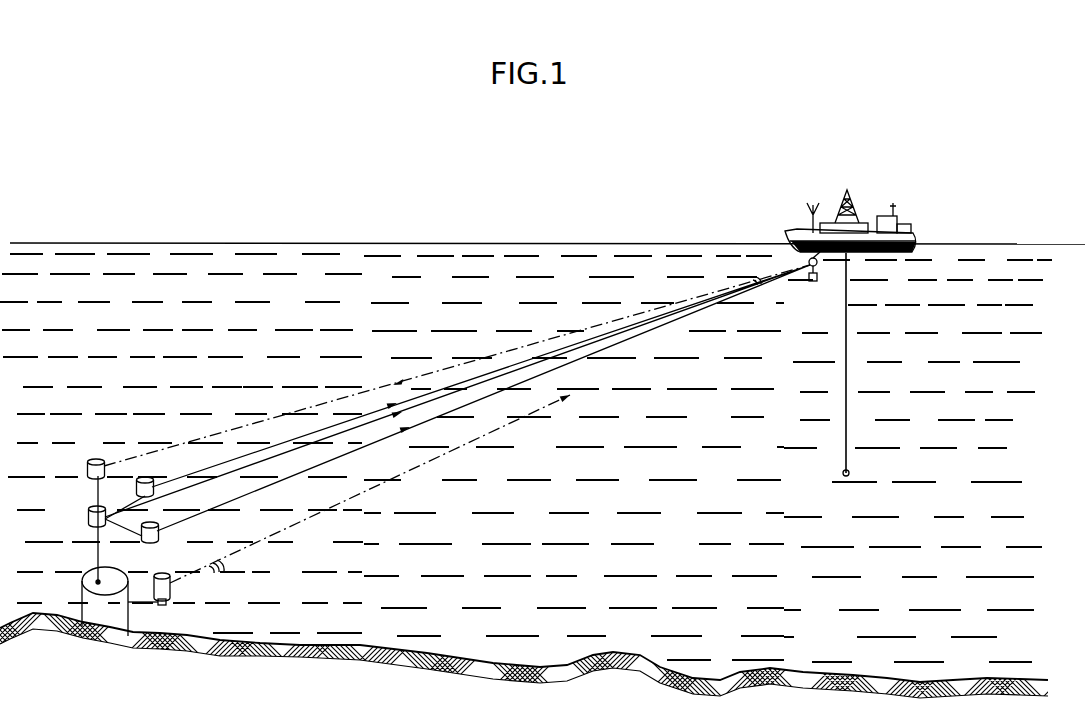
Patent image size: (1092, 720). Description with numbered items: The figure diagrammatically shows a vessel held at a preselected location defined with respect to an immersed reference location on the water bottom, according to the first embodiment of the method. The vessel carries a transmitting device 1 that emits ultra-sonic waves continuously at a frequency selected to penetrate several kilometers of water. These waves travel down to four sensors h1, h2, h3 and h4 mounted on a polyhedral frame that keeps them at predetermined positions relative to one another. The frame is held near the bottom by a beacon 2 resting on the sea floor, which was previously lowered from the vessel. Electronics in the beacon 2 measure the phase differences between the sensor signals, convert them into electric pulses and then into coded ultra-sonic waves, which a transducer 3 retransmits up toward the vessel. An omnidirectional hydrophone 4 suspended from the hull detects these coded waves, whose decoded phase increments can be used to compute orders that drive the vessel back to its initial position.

The transmitting device 1 is at (837, 364).
The beacon 2 is at (92, 618).
The transducer 3 is at (161, 603).
The omnidirectional hydrophone 4 is at (780, 305).
The sensor h1 is at (96, 458).
The sensor h2 is at (84, 529).
The sensor h3 is at (144, 540).
The sensor h4 is at (132, 488).